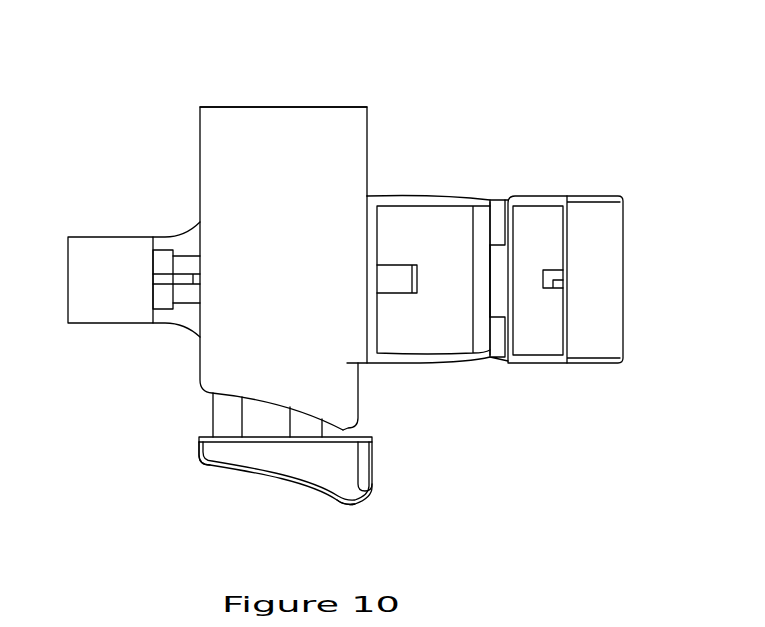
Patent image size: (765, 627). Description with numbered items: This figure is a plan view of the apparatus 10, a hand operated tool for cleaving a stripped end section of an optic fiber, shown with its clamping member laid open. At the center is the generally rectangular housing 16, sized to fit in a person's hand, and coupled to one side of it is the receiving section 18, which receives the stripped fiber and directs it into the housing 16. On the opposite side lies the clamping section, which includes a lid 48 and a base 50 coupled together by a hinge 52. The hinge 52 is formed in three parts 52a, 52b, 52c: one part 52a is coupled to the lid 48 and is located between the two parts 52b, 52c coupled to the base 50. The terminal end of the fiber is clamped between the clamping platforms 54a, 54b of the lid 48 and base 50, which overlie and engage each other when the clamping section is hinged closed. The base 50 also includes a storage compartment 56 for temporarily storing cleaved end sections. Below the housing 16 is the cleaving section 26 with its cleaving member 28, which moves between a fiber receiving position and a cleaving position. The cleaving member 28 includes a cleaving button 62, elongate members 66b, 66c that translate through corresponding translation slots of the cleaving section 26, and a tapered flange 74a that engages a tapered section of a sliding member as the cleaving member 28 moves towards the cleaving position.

The apparatus 10 is at (232, 107).
The housing 16 is at (238, 183).
The receiving section 18 is at (103, 248).
The cleaving section 26 is at (233, 465).
The cleaving member 28 is at (353, 503).
The lid 48 is at (578, 197).
The base 50 is at (443, 366).
The hinge 52 is at (490, 275).
The hinge part 52a is at (500, 282).
The hinge part 52b is at (500, 225).
The hinge part 52c is at (498, 334).
The clamping platform 54a is at (548, 287).
The clamping platform 54b is at (367, 290).
The storage compartment 56 is at (450, 247).
The cleaving button 62 is at (202, 455).
The elongate member 66b is at (212, 410).
The elongate member 66c is at (353, 428).
The tapered flange 74a is at (305, 425).